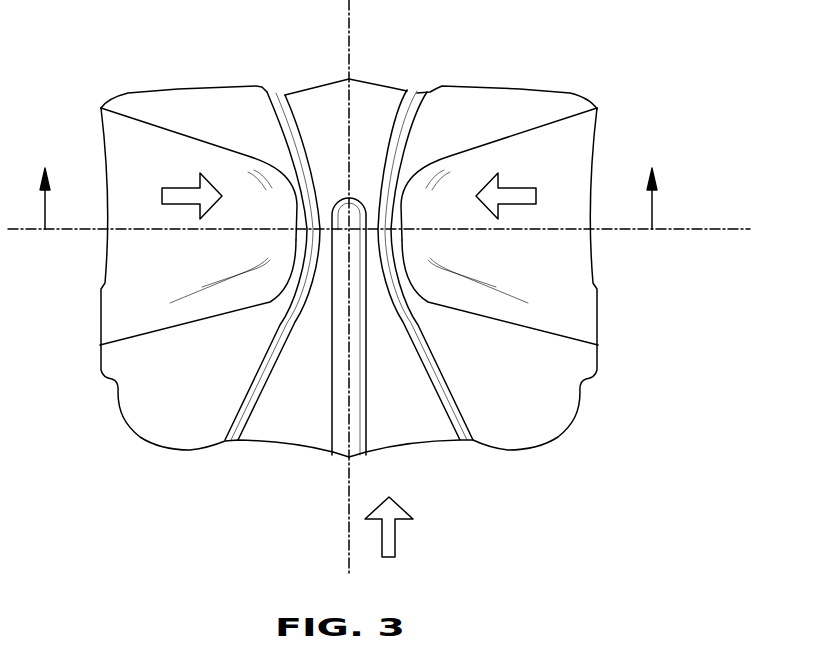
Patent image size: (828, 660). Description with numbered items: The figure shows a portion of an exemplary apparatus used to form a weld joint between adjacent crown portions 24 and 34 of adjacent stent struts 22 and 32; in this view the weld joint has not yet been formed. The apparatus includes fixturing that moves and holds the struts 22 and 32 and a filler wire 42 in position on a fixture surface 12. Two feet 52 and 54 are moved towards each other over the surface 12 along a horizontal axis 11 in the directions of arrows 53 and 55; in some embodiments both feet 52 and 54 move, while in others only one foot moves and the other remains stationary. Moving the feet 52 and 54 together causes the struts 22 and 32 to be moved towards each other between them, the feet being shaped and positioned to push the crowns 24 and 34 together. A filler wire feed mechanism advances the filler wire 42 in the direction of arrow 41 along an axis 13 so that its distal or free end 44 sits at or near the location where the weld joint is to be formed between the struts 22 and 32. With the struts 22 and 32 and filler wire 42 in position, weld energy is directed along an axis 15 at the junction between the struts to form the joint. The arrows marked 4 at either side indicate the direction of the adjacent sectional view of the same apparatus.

The section line 4- 4 is at (349, 183).
The axis 11 is at (683, 230).
The fixture surface 12 is at (212, 383).
The axis 13 is at (350, 51).
The axis 15 is at (349, 231).
The strut 22 is at (407, 138).
The crown portion 24 is at (397, 112).
The strut 32 is at (297, 115).
The crown portion 34 is at (321, 213).
The arrow 41 is at (395, 532).
The filler wire 42 is at (367, 408).
The distal or free end 44 is at (361, 197).
The foot 52 is at (543, 317).
The arrow 53 is at (508, 188).
The foot 54 is at (182, 310).
The arrow 55 is at (190, 188).